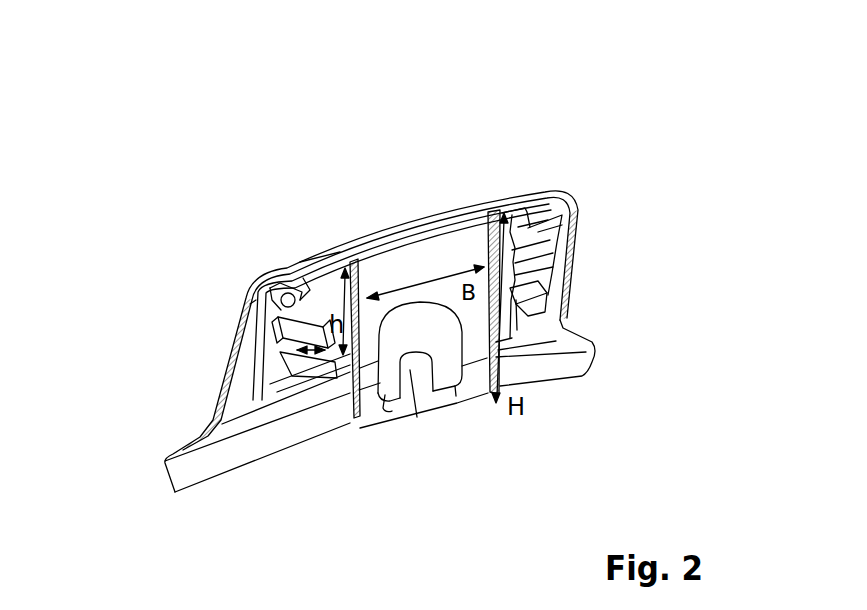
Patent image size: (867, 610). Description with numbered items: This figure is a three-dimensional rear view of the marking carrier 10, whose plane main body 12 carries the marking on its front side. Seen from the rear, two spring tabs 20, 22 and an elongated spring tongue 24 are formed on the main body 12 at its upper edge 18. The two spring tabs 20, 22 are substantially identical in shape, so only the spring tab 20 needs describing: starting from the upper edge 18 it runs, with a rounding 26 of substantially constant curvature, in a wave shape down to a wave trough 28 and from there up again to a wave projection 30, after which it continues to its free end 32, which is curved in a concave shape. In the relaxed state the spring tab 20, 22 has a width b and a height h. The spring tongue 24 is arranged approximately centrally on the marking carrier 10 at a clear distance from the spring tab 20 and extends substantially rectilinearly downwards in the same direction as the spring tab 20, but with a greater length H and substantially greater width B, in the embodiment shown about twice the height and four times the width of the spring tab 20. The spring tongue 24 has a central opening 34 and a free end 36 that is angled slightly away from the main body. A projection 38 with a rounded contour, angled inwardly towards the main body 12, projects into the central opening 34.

The marking carrier 10 is at (591, 191).
The main body 12 is at (594, 355).
The upper edge 18 is at (357, 240).
The spring tab 20 is at (295, 272).
The spring tab 22 is at (580, 275).
The spring tongue 24 is at (433, 277).
The rounding 26 is at (262, 292).
The wave trough 28 is at (290, 316).
The wave projection 30 is at (310, 368).
The free end 32 is at (300, 370).
The central opening 34 is at (473, 437).
The free end 36 is at (370, 425).
The projection 38 is at (407, 370).